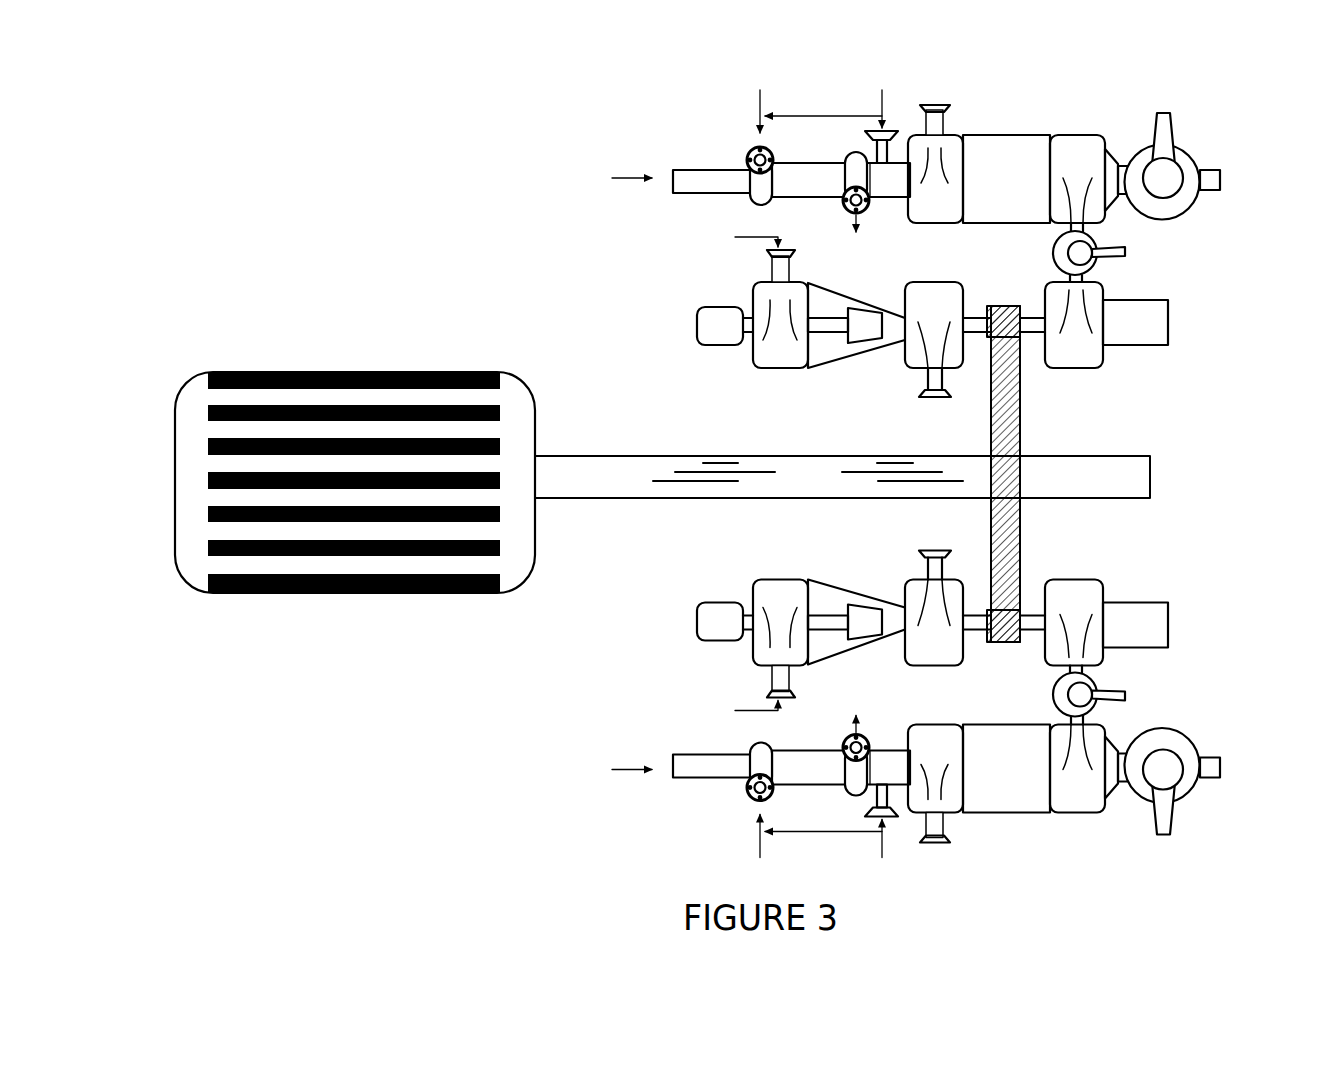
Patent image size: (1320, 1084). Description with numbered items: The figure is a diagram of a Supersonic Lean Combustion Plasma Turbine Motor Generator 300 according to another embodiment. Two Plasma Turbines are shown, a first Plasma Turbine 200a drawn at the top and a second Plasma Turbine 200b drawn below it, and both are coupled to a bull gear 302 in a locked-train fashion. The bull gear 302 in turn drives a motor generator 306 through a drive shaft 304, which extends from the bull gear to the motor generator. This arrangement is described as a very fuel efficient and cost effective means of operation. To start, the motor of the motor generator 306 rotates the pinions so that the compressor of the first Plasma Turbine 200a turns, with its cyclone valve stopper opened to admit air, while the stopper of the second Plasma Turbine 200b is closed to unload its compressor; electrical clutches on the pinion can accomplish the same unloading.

The Supersonic Lean Combustion Plasma Turbine Motor Generator 300 is at (366, 104).
The first Plasma Turbine 200a is at (1193, 105).
The second Plasma Turbine 200b is at (1175, 682).
The bull gear 302 is at (1004, 442).
The drive shaft 304 is at (645, 458).
The motor generator 306 is at (246, 372).